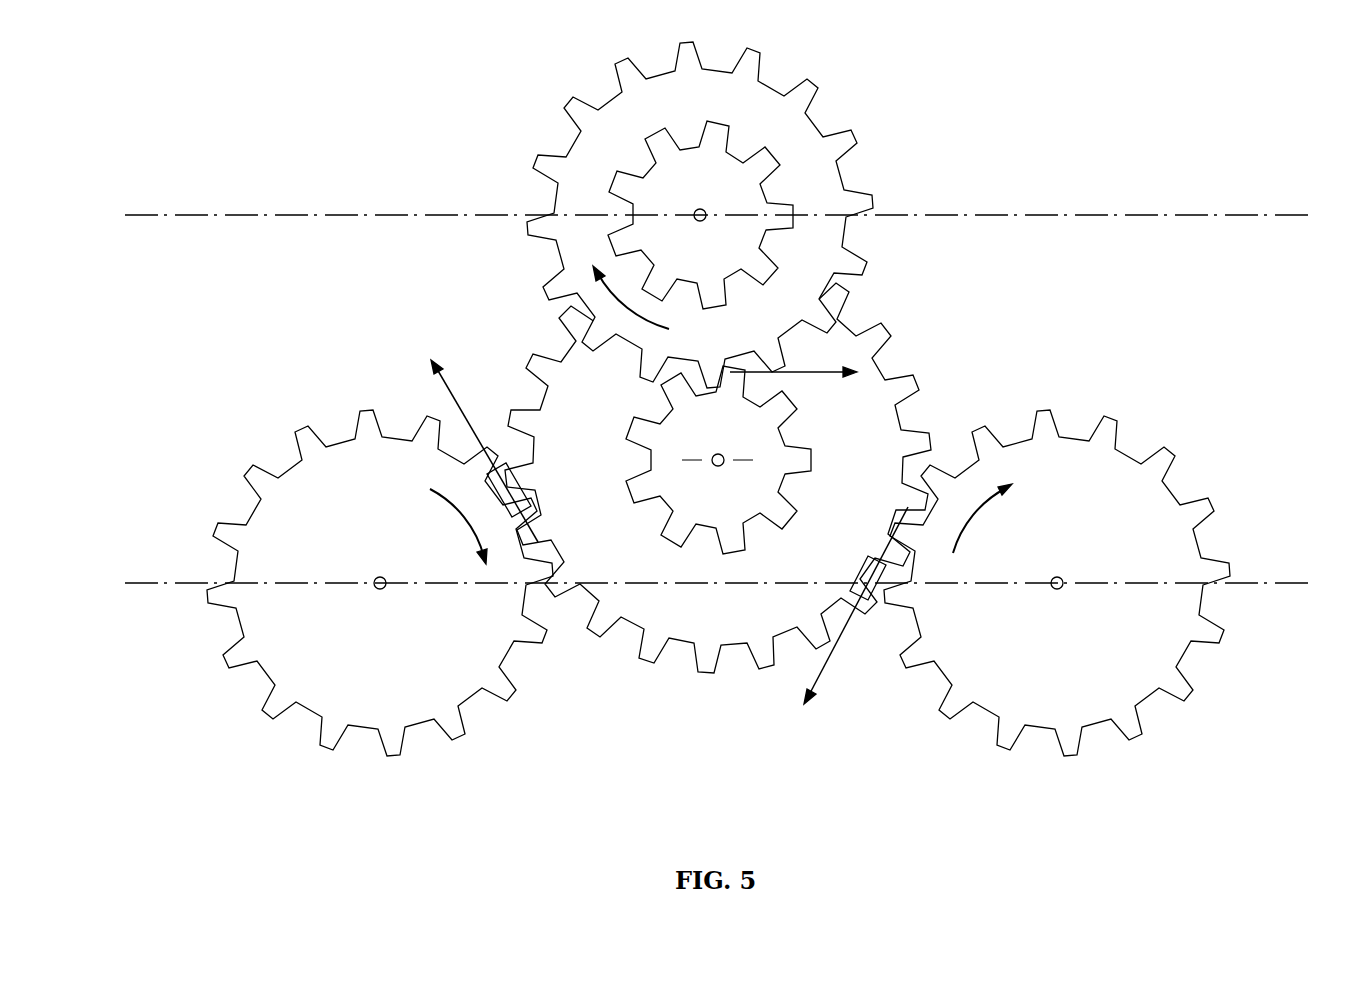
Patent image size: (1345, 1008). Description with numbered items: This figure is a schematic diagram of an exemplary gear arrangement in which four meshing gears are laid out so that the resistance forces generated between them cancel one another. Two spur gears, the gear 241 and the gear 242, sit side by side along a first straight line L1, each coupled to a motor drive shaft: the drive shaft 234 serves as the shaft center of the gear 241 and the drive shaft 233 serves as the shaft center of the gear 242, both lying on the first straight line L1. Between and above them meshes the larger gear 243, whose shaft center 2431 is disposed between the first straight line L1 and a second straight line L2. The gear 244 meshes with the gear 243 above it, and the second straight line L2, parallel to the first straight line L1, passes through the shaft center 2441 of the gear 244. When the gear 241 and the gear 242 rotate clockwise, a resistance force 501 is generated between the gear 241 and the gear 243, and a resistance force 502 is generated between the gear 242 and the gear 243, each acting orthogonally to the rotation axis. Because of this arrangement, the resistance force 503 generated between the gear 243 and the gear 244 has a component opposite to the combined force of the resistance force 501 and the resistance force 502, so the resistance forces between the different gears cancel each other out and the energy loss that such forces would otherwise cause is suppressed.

The gear 241 is at (1118, 468).
The gear 242 is at (297, 475).
The gear 243 is at (885, 418).
The gear 244 is at (757, 100).
The shaft center 2431 is at (721, 450).
The shaft center 2441 is at (701, 206).
The drive shaft 233 is at (383, 576).
The drive shaft 234 is at (1060, 576).
The resistance force 501 is at (828, 670).
The resistance force 502 is at (466, 412).
The resistance force 503 is at (810, 378).
The first straight line L1 is at (1270, 583).
The second straight line L2 is at (1273, 215).